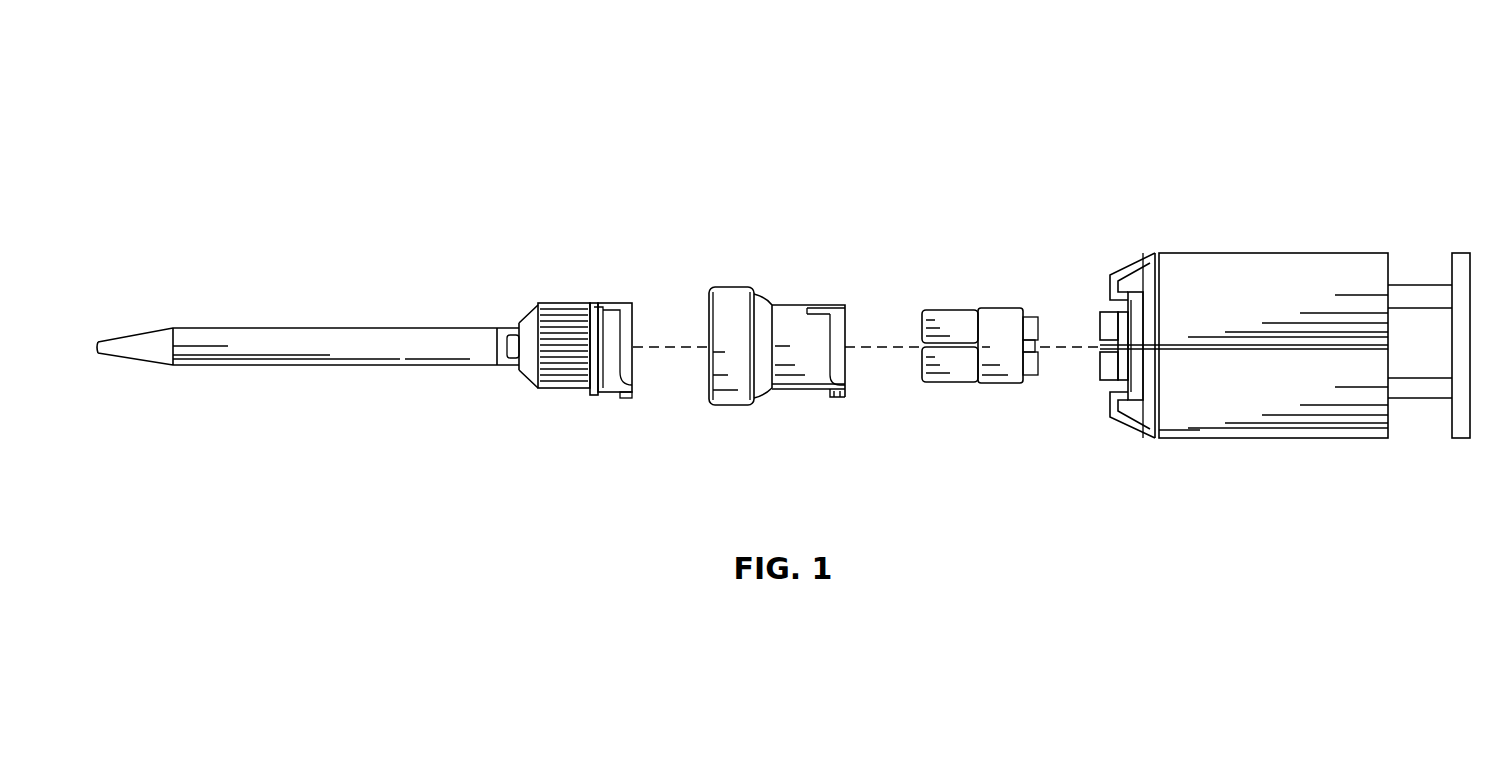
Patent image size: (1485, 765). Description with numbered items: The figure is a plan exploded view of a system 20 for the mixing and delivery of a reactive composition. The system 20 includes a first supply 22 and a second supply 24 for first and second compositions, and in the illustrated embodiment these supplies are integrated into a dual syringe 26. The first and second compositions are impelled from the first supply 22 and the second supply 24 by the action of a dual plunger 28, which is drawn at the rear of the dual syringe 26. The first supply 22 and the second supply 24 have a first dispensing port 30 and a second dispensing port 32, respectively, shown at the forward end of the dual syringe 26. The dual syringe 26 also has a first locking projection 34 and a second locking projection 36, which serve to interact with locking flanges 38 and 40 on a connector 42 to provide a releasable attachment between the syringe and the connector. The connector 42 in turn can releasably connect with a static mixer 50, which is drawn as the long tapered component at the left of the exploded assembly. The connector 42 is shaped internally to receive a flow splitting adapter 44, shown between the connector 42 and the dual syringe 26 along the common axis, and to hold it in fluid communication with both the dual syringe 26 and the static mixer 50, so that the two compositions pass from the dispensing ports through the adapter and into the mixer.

The system 20 is at (319, 71).
The first supply 22 is at (1298, 268).
The second supply 24 is at (1283, 441).
The dual syringe 26 is at (1207, 442).
The dual plunger 28 is at (1452, 265).
The first dispensing port 30 is at (1098, 326).
The second dispensing port 32 is at (1098, 364).
The first locking projection 34 is at (1110, 282).
The second locking projection 36 is at (1110, 411).
The locking flange 38 is at (835, 304).
The locking flange 40 is at (838, 398).
The connector 42 is at (770, 394).
The flow splitting adapter 44 is at (955, 304).
The static mixer 50 is at (305, 322).